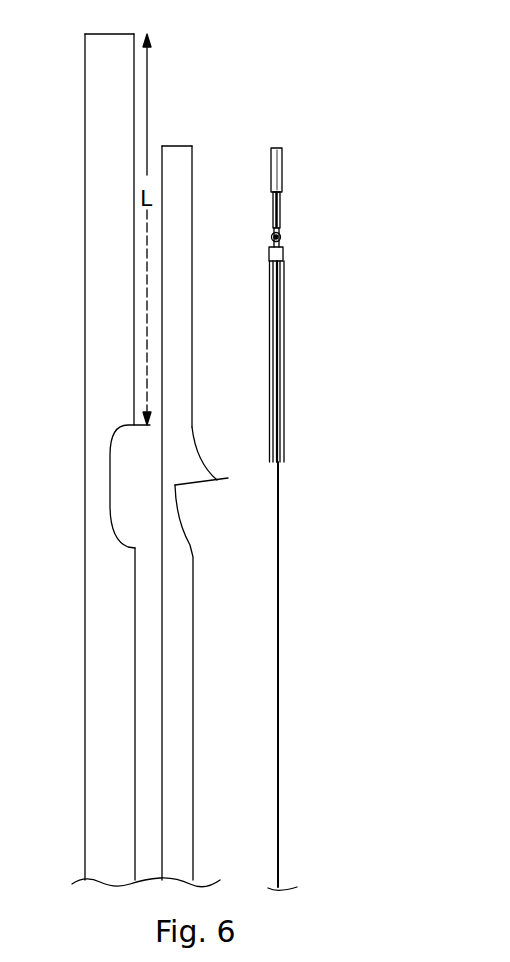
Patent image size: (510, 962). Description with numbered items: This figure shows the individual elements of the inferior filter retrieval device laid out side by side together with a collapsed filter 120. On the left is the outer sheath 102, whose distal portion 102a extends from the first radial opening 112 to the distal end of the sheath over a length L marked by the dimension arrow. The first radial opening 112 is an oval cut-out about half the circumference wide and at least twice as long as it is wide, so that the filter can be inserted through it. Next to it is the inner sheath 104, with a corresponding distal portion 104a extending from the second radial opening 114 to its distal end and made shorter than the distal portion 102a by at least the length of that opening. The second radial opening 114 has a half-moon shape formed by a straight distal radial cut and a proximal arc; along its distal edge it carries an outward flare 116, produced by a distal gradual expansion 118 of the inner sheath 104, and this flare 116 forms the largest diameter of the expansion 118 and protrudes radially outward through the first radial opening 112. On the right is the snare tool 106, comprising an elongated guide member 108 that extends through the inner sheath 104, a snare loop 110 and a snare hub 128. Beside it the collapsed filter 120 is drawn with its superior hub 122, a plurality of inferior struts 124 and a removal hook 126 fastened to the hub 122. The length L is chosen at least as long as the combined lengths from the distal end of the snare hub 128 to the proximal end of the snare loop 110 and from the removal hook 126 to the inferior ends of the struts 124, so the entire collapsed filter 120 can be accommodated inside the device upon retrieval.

The outer sheath 102 is at (84, 435).
The distal portion of the outer sheath 102a is at (117, 168).
The inner sheath 104 is at (163, 482).
The distal portion of the inner sheath 104a is at (182, 307).
The first radial opening 112 is at (134, 548).
The second radial opening 114 is at (189, 530).
The outward flare 116 is at (228, 478).
The distal gradual expansion 118 is at (202, 462).
The snare tool 106 is at (301, 154).
The elongated guide member 108 is at (280, 503).
The snare loop 110 is at (280, 217).
The vena cava filter 120 is at (325, 361).
The superior hub 122 is at (283, 253).
The inferior struts 124 is at (285, 403).
The removal hook 126 is at (282, 227).
The snare hub 128 is at (275, 148).